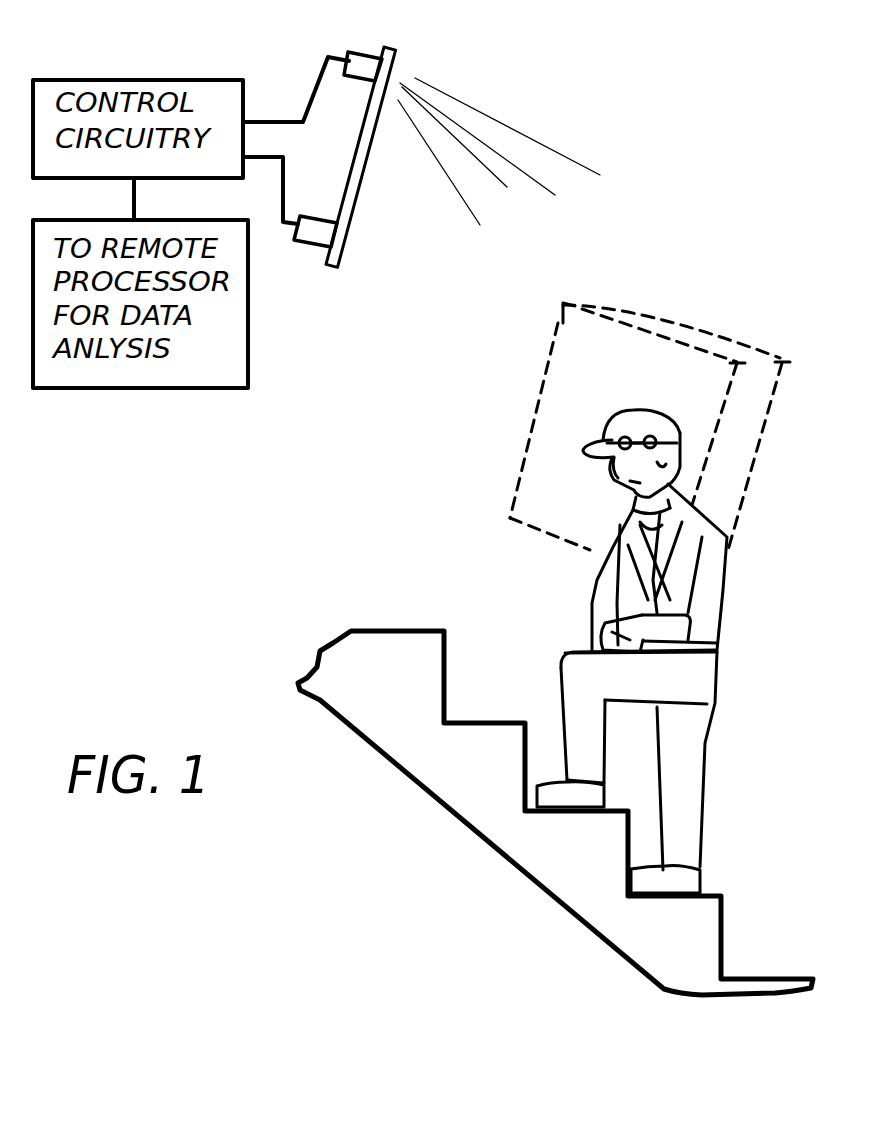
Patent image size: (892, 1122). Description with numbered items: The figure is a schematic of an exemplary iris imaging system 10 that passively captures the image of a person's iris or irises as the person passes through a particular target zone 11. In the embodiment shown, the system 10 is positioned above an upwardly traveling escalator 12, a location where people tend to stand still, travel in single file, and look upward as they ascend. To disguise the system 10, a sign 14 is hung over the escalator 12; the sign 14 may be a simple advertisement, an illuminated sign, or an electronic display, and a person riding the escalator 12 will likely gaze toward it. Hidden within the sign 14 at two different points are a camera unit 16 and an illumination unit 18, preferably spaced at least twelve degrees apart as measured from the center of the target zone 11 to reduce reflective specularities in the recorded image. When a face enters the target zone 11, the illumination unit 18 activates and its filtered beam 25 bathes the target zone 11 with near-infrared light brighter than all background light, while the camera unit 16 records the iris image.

The iris imaging system 10 is at (612, 240).
The target zone 11 is at (520, 478).
The escalator 12 is at (357, 678).
The sign 14 is at (363, 180).
The camera unit 16 is at (306, 248).
The illumination unit 18 is at (365, 48).
The filtered beam 25 is at (497, 122).